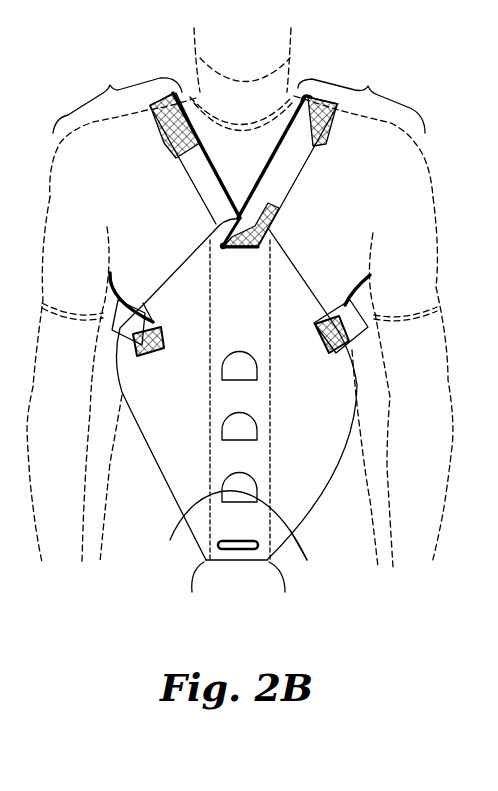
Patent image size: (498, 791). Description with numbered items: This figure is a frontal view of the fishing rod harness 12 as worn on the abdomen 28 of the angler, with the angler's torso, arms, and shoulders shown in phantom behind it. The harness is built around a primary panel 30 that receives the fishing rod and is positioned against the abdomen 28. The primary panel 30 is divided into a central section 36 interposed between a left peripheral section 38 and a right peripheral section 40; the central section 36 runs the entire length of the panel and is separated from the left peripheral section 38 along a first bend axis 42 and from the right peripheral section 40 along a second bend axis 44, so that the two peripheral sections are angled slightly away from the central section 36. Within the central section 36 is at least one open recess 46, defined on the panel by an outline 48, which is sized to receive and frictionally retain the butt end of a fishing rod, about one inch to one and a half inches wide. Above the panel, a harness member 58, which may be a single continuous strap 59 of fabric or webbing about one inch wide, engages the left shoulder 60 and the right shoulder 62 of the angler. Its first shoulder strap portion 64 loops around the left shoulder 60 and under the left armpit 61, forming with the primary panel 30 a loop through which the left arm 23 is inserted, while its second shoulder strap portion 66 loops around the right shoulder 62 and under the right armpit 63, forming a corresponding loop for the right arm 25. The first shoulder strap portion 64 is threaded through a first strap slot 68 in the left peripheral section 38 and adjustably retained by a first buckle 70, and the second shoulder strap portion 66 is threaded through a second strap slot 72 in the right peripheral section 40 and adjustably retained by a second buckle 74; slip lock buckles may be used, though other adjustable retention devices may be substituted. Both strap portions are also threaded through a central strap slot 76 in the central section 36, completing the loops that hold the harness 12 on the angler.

The fishing rod harness 12 is at (336, 497).
The left arm 23 is at (418, 216).
The right arm 25 is at (60, 213).
The abdomen 28 is at (166, 209).
The primary panel 30 is at (300, 256).
The central section 36 is at (253, 333).
The left peripheral section 38 is at (311, 434).
The right peripheral section 40 is at (185, 432).
The first bend axis 42 is at (283, 591).
The second bend axis 44 is at (188, 591).
The open recess 46 is at (224, 527).
The outline 48 is at (311, 560).
The harness member 58 is at (225, 192).
The strap 59 is at (292, 173).
The left shoulder 60 is at (361, 98).
The left armpit 61 is at (371, 342).
The right shoulder 62 is at (117, 96).
The right armpit 63 is at (108, 343).
The first shoulder strap portion 64 is at (328, 152).
The second shoulder strap portion 66 is at (152, 147).
The first strap slot 68 is at (328, 343).
The first buckle 70 is at (348, 305).
The second strap slot 72 is at (152, 348).
The second buckle 74 is at (140, 304).
The central strap slot 76 is at (246, 257).